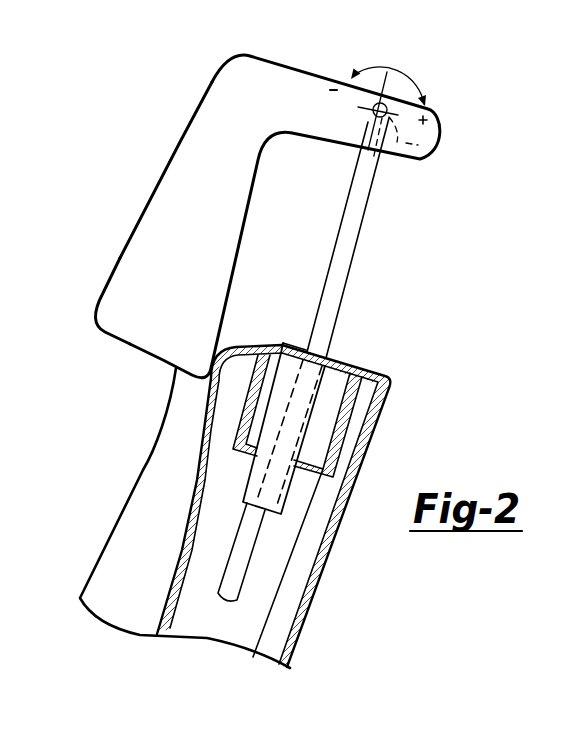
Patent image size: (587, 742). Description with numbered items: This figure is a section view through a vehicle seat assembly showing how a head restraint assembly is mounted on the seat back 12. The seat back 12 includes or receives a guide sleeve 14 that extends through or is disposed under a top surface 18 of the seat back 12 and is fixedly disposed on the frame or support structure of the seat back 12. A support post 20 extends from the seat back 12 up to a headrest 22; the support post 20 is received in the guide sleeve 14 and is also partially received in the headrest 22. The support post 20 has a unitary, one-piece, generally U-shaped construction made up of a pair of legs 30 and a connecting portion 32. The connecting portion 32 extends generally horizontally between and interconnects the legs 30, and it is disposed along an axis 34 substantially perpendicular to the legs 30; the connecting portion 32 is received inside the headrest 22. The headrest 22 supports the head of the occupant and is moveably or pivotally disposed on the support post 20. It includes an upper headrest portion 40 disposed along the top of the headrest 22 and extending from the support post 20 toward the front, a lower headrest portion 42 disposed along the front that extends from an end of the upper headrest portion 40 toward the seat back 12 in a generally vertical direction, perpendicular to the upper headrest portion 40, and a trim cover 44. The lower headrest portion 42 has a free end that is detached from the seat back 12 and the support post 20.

The seat back 12 is at (132, 488).
The guide sleeve 14 is at (300, 424).
The top surface 18 is at (377, 368).
The support post 20 is at (360, 243).
The headrest 22 is at (230, 62).
The leg 30 is at (236, 585).
The connecting portion 32 is at (368, 117).
The axis 34 is at (430, 148).
The upper headrest portion 40 is at (307, 80).
The lower headrest portion 42 is at (103, 295).
The trim cover 44 is at (178, 183).